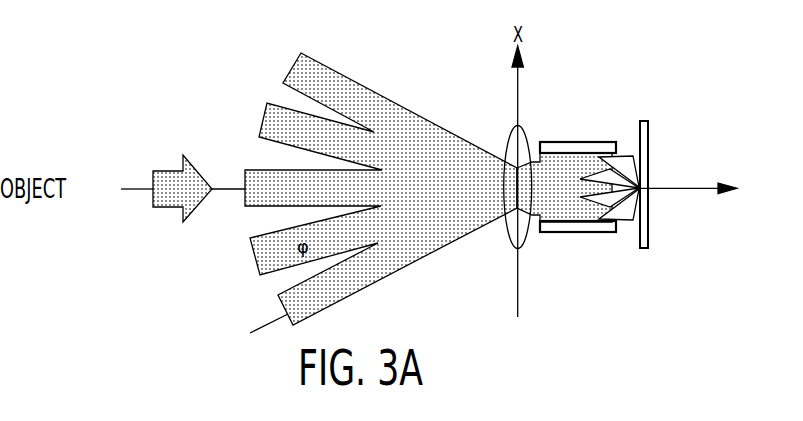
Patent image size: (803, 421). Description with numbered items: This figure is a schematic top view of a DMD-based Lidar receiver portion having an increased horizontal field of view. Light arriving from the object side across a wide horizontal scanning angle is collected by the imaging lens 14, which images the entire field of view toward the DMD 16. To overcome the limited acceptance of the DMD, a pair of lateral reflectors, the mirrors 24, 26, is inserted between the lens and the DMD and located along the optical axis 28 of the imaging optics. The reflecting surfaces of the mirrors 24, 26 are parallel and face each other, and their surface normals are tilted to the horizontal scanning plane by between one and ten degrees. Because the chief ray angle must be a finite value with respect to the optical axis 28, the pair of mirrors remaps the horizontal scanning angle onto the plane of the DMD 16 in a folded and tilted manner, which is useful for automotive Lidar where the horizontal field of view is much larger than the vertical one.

The imaging lens 14 is at (518, 302).
The DMD 16 is at (649, 211).
The mirror 24 is at (605, 233).
The mirror 26 is at (600, 138).
The optical axis 28 is at (736, 183).